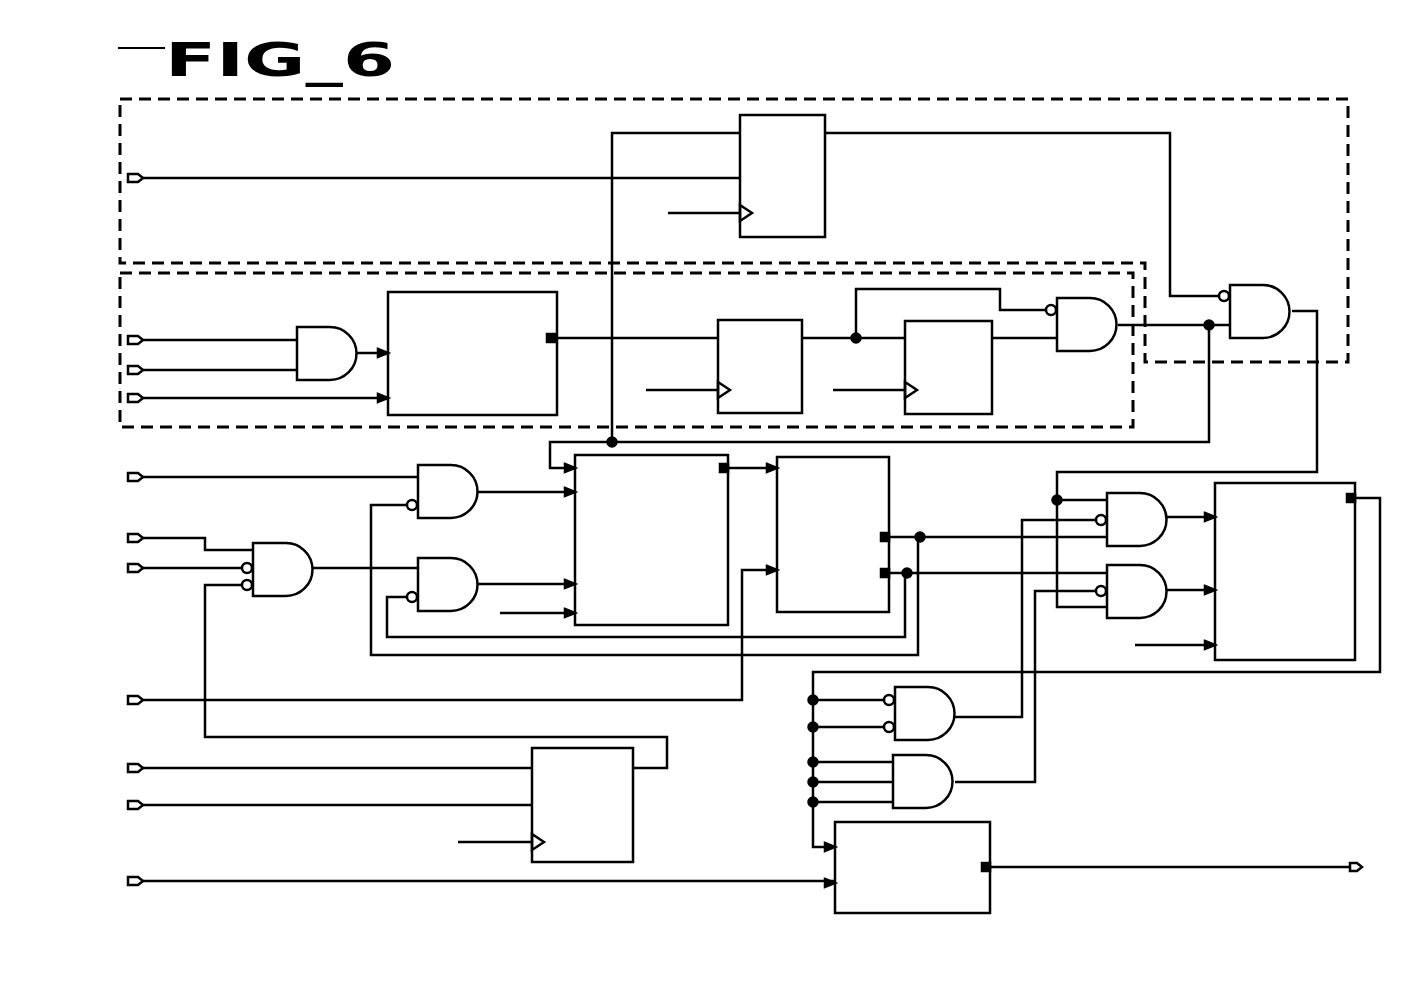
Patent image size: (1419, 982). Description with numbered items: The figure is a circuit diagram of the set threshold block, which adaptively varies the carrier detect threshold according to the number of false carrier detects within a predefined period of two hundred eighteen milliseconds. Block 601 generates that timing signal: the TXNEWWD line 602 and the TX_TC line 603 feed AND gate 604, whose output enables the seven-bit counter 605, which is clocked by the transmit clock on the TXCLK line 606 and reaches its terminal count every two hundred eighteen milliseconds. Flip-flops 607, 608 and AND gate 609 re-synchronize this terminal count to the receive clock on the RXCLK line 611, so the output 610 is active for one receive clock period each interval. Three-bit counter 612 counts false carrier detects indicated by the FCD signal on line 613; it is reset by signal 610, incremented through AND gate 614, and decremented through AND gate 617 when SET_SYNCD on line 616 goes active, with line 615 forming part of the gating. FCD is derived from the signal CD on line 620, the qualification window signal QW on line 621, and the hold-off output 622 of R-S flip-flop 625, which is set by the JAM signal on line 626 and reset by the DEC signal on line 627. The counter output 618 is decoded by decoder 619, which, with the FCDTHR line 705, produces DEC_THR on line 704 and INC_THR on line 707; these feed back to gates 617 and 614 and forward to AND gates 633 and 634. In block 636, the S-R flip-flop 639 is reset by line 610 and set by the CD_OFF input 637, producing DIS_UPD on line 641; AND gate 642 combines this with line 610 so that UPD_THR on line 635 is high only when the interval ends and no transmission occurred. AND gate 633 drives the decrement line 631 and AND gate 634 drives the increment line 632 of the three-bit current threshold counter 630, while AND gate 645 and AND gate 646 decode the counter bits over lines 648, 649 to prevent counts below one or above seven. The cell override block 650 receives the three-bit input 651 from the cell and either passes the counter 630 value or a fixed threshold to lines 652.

The update threshold block 636 is at (1258, 96).
The timing signal generation block 601 is at (1140, 418).
The CD_OFF signal line 637 is at (272, 177).
The S-R flip-flop 639 is at (746, 176).
The 218 msec timing signal line 610 is at (610, 228).
The DIS_UPD line 641 is at (948, 136).
The AND gate 642 is at (1249, 311).
The UPD_THR line 635 is at (1318, 462).
The AND gate 609 is at (1035, 320).
The TXNEWWD line 602 is at (262, 338).
The TX_TC line 603 is at (222, 378).
The TXCLK input 606 is at (228, 407).
The AND gate 604 is at (342, 353).
The 7-bit counter 605 is at (553, 353).
The flip-flop 607 is at (811, 366).
The flip-flop 608 is at (948, 367).
The receive clock RXCLK line 611 is at (704, 397).
The SET_SYNCD line 616 is at (278, 476).
The AND gate 617 is at (644, 560).
The FCD line 613 is at (388, 568).
The AND gate 614 is at (491, 584).
The feedback line 615 is at (432, 637).
The 3-bit false carrier detect counter 612 is at (614, 540).
The counter output 618 is at (752, 472).
The CD line 620 is at (214, 551).
The QW line 621 is at (196, 573).
The hold-off output 622 is at (314, 737).
The R-S flip-flop 625 is at (545, 805).
The JAM line 626 is at (253, 768).
The DEC line 627 is at (198, 808).
The FCDTHR line 705 is at (640, 700).
The decoder 619 is at (833, 534).
The DEC_THR line 704 is at (903, 532).
The INC_THR line 707 is at (998, 578).
The AND gate 633 is at (1131, 519).
The decrement control line 631 is at (1183, 515).
The AND gate 634 is at (1131, 591).
The increment control line 632 is at (1180, 588).
The 3-bit current threshold counter 630 is at (1095, 667).
The AND gate 645 is at (884, 710).
The AND gate 646 is at (883, 776).
The signal line 648 is at (1012, 712).
The signal line 649 is at (1016, 780).
The cell override block 650 is at (907, 867).
The 3-bit input from the cell 651 is at (324, 881).
The threshold output lines 652 is at (1016, 867).